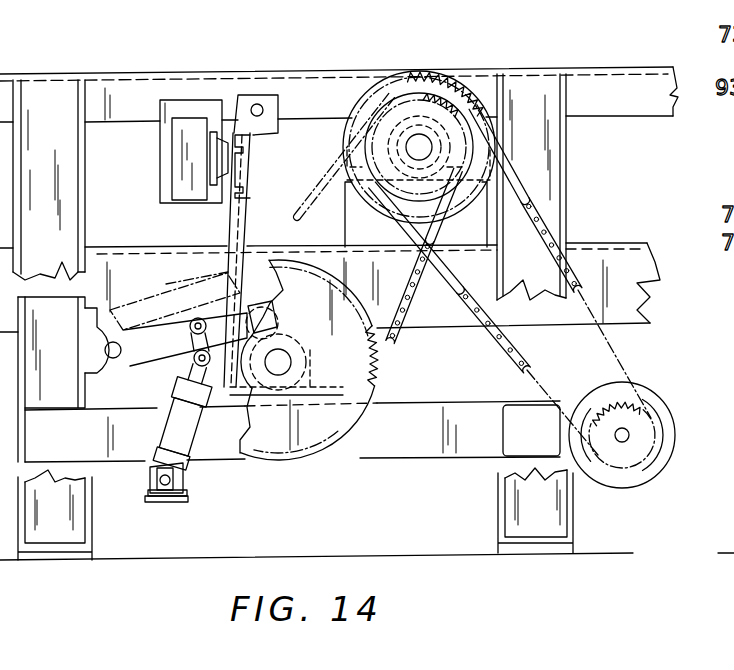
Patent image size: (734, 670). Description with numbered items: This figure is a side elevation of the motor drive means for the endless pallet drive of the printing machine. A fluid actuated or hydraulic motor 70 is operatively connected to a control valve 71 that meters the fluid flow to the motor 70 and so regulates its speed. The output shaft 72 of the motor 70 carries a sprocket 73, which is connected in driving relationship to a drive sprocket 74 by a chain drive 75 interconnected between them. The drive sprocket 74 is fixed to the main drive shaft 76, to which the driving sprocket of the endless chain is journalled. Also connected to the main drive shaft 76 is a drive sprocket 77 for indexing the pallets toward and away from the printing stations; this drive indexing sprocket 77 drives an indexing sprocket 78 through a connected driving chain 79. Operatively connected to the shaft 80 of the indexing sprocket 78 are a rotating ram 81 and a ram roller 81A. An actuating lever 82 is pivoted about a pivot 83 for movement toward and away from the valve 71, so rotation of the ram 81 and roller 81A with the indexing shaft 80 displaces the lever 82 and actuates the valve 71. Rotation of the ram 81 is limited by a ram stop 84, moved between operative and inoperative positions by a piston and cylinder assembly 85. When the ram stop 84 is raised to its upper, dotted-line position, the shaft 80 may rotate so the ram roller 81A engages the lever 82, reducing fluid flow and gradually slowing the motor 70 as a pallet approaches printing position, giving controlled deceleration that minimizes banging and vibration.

The hydraulic motor 70 is at (677, 410).
The control valve 71 is at (213, 133).
The output shaft 72 is at (617, 440).
The sprocket 73 is at (642, 448).
The drive sprocket 74 is at (445, 97).
The chain drive 75 is at (547, 230).
The main drive shaft 76 is at (422, 143).
The drive sprocket 77 is at (408, 113).
The indexing sprocket 78 is at (340, 420).
The driving chain 79 is at (395, 335).
The shaft 80 is at (291, 363).
The rotating ram 81 is at (272, 318).
The ram roller 81A is at (280, 320).
The actuating lever 82 is at (237, 229).
The pivot 83 is at (260, 113).
The ram stop 84 is at (182, 337).
The piston and cylinder assembly 85 is at (182, 428).